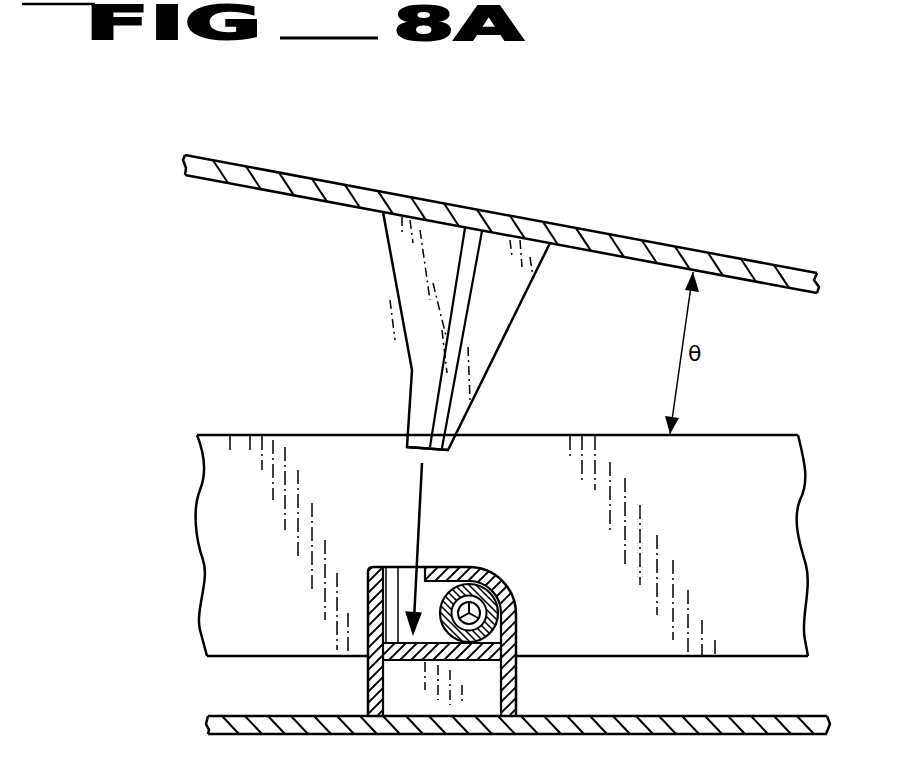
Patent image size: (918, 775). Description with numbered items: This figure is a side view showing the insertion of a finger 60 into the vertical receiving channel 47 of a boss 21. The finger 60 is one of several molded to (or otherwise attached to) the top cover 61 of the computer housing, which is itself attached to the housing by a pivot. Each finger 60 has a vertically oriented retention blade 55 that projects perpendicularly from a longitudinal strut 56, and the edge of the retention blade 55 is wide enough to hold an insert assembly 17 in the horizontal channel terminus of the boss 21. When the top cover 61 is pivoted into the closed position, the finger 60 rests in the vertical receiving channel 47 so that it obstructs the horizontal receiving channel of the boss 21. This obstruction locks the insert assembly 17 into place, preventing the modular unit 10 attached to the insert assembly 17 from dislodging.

The modular unit 10 is at (537, 500).
The insert assembly 17 is at (492, 608).
The boss 21 is at (520, 694).
The vertical receiving channel 47 is at (430, 579).
The retention blade 55 is at (455, 342).
The longitudinal strut 56 is at (452, 430).
The finger 60 is at (413, 294).
The top cover 61 is at (632, 232).